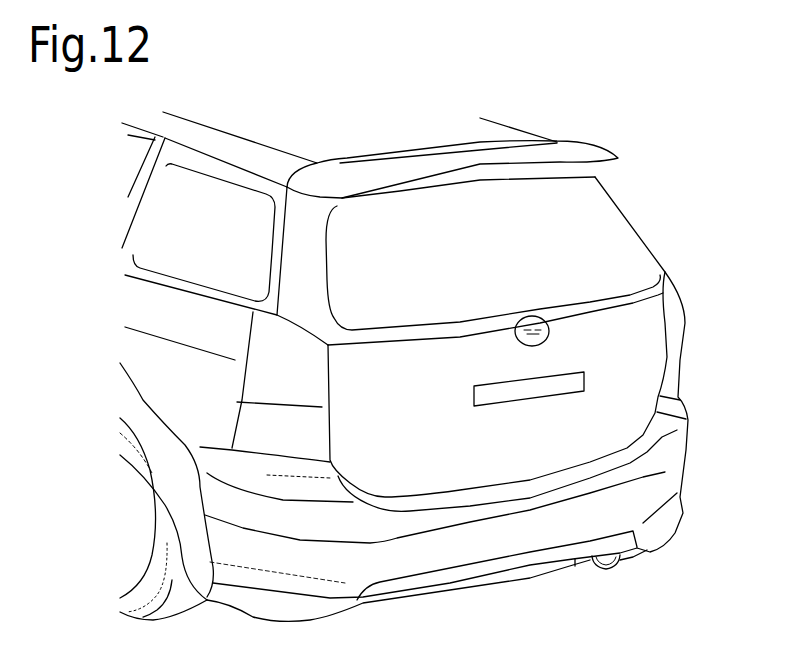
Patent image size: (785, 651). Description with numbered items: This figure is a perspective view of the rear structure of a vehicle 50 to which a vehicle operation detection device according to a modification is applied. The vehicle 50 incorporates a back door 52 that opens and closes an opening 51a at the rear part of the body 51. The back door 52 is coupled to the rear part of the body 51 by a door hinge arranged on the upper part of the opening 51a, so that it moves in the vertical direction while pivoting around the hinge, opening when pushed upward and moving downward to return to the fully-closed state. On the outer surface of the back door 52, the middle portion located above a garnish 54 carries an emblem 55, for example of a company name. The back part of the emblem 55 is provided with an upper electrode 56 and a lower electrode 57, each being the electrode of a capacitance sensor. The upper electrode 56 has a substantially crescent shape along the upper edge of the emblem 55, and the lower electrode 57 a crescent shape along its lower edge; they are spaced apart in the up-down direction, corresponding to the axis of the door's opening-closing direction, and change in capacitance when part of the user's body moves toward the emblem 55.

The vehicle 50 is at (641, 121).
The body 51 is at (499, 119).
The opening 51a is at (333, 382).
The back door 52 is at (624, 420).
The garnish 54 is at (486, 407).
The emblem 55 is at (514, 338).
The upper electrode 56 is at (529, 316).
The lower electrode 57 is at (545, 344).